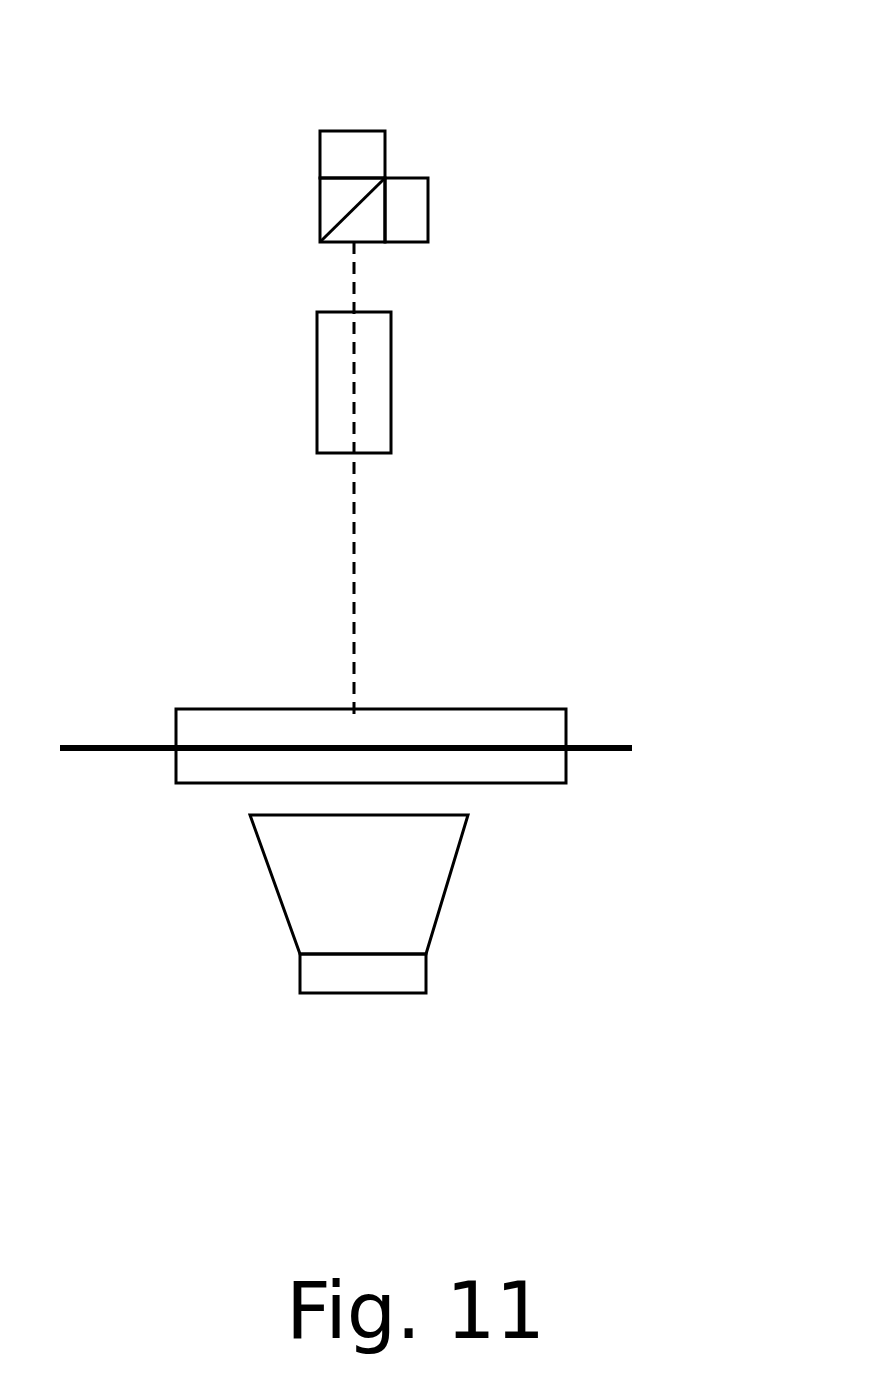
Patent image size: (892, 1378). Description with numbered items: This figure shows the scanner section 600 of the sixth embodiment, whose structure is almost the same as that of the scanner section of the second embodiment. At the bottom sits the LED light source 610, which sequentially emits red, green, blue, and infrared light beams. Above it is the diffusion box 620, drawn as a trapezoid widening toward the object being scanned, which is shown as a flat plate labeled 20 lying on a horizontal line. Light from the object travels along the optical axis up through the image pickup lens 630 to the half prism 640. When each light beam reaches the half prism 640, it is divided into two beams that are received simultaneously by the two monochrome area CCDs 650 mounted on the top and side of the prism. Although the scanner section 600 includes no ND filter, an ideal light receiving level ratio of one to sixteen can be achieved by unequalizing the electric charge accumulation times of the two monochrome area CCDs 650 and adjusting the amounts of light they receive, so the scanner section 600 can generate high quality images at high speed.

The scanner section 600 is at (577, 197).
The monochrome area CCDs 650 is at (430, 203).
The half prism 640 is at (320, 205).
The image pickup lens 630 is at (391, 387).
The recording medium 20 is at (108, 747).
The diffusion box 620 is at (452, 873).
The LED light source 610 is at (427, 970).